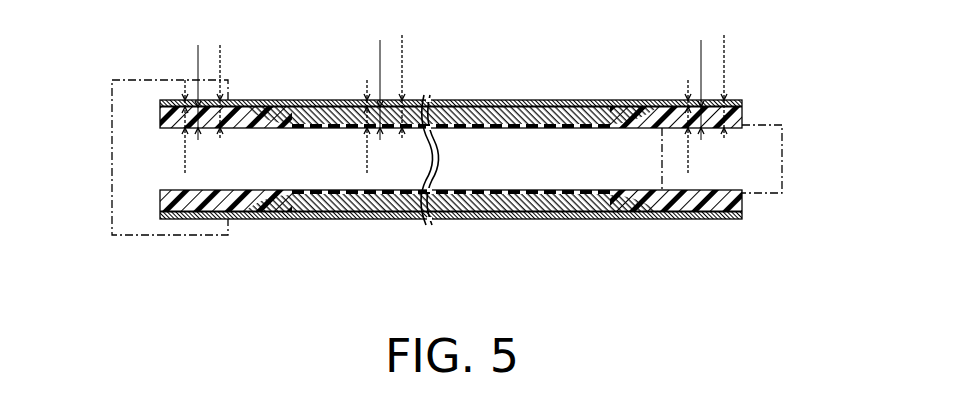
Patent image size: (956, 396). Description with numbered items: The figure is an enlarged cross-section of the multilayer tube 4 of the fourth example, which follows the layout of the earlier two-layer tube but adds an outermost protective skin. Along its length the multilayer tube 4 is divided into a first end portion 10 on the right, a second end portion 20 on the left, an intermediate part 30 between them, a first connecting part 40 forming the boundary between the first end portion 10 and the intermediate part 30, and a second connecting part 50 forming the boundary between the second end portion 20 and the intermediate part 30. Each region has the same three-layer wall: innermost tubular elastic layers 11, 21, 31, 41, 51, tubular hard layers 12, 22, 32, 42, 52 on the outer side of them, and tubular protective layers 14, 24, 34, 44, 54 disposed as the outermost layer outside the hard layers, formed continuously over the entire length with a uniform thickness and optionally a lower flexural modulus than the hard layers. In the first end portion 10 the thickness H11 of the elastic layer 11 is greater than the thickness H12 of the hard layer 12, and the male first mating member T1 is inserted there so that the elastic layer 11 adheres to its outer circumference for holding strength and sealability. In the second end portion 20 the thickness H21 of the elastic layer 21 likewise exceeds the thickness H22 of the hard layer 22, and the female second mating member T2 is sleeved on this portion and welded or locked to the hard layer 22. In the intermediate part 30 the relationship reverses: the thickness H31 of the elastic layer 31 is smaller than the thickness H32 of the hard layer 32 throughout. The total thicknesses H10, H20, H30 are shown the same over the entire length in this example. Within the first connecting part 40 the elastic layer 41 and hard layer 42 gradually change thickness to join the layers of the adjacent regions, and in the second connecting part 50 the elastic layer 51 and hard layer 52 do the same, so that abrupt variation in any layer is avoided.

The multilayer tube 4 is at (744, 34).
The first end portion 10 is at (728, 169).
The elastic layer 11 is at (745, 118).
The hard layer 12 is at (742, 113).
The protective layer 14 is at (735, 105).
The second end portion 20 is at (169, 158).
The elastic layer 21 is at (162, 119).
The hard layer 22 is at (162, 108).
The protective layer 24 is at (173, 103).
The intermediate part 30 is at (451, 162).
The elastic layer 31 is at (527, 108).
The hard layer 32 is at (475, 103).
The protective layer 34 is at (500, 105).
The first connecting part 40 is at (628, 162).
The elastic layer 41 is at (647, 110).
The hard layer 42 is at (632, 110).
The protective layer 44 is at (642, 110).
The second connecting part 50 is at (268, 162).
The elastic layer 51 is at (262, 118).
The hard layer 52 is at (268, 117).
The protective layer 54 is at (272, 110).
The total thickness H10 is at (713, 85).
The thickness of elastic layer H11 is at (677, 127).
The thickness of hard layer H12 is at (689, 87).
The total thickness H20 is at (208, 88).
The thickness of elastic layer H21 is at (173, 127).
The thickness of hard layer H22 is at (187, 88).
The total thickness H30 is at (392, 86).
The thickness of elastic layer H31 is at (356, 127).
The thickness of hard layer H32 is at (368, 87).
The first mating member T1 is at (770, 196).
The second mating member T2 is at (136, 238).